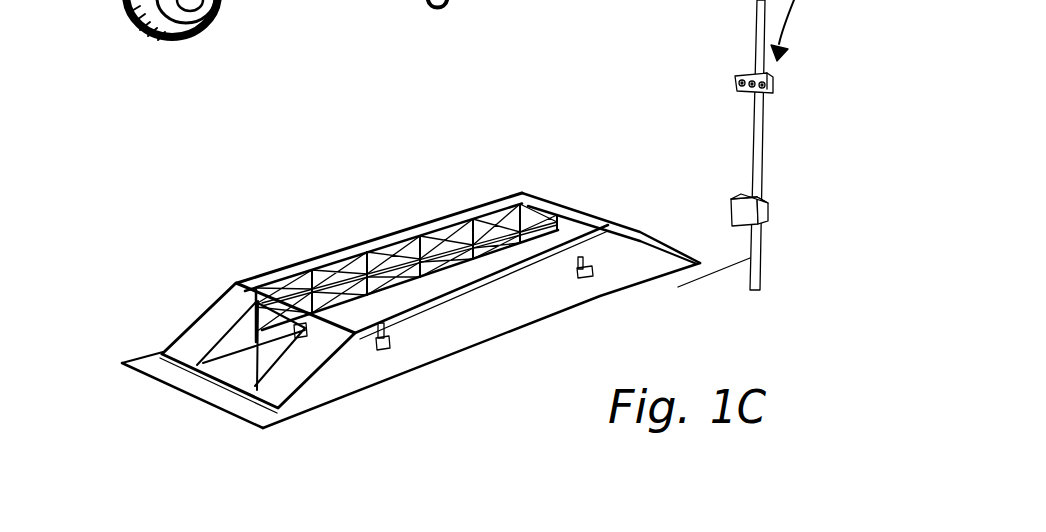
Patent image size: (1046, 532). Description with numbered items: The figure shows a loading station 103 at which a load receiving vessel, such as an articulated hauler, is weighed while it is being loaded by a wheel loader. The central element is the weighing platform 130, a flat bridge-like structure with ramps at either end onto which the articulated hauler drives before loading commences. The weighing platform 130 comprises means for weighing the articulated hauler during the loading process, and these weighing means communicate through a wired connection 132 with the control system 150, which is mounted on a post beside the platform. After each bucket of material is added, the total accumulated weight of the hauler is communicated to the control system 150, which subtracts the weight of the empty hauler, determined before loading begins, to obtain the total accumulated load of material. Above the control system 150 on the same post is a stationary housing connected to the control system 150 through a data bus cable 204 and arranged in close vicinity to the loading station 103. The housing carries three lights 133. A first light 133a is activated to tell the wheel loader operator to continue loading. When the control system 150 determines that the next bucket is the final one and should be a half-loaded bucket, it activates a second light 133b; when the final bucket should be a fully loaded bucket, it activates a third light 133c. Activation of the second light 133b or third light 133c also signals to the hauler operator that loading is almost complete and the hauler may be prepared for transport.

The loading station 103 is at (160, 192).
The weighing platform 130 is at (404, 223).
The wired connection 132 is at (679, 287).
The lights 133 is at (748, 89).
The first light 133a is at (735, 83).
The second light 133b is at (753, 92).
The third light 133c is at (766, 94).
The control system 150 is at (767, 220).
The data bus cable 204 is at (758, 148).